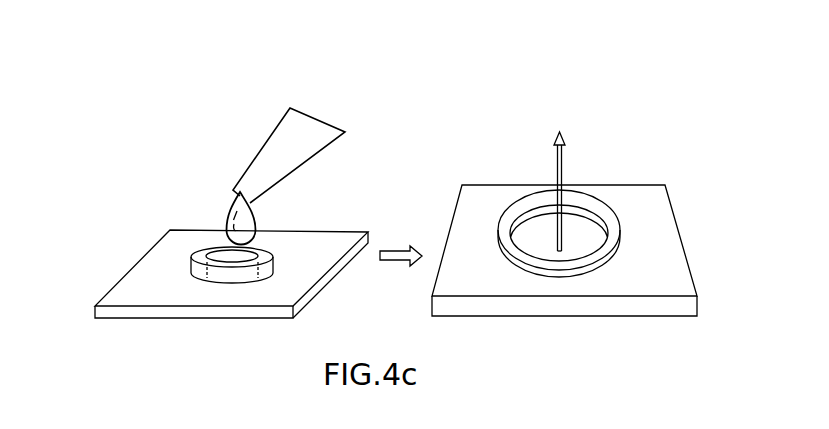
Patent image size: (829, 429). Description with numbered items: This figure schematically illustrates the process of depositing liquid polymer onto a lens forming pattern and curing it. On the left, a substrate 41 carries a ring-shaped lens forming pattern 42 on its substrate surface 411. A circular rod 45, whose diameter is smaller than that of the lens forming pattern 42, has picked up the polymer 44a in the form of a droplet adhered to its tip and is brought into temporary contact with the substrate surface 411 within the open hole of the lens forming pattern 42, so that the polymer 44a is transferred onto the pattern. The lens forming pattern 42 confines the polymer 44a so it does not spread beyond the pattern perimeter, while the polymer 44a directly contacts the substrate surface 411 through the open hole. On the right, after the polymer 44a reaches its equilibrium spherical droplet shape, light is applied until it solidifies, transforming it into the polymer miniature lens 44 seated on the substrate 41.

The substrate 41 is at (406, 251).
The substrate surface 411 is at (158, 280).
The lens forming pattern 42 is at (610, 237).
The polymer miniature lens 44 is at (612, 202).
The polymer 44a is at (230, 218).
The circular rod 45 is at (278, 153).